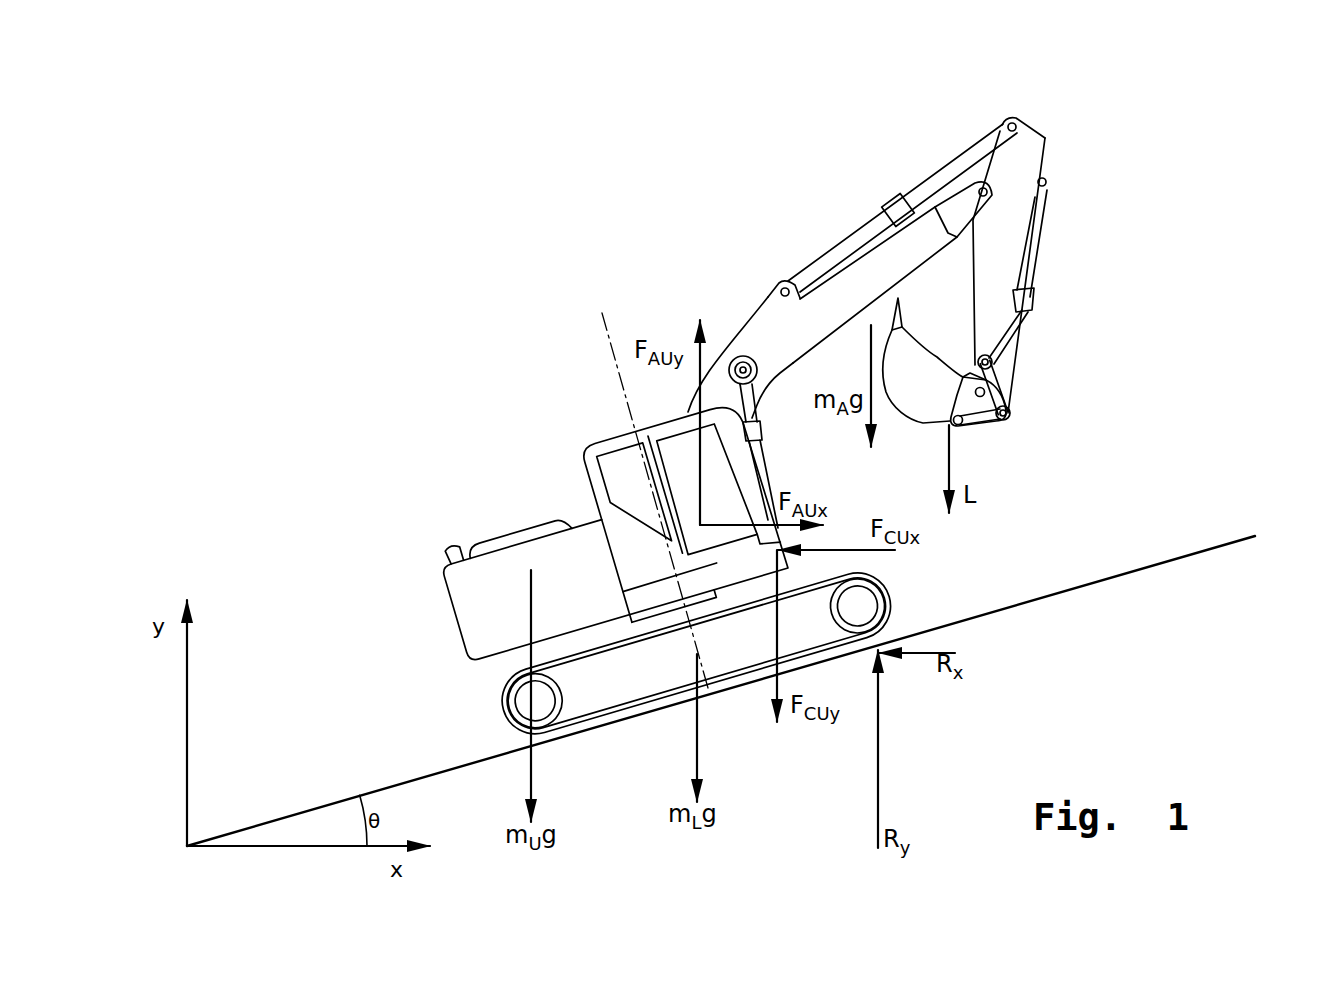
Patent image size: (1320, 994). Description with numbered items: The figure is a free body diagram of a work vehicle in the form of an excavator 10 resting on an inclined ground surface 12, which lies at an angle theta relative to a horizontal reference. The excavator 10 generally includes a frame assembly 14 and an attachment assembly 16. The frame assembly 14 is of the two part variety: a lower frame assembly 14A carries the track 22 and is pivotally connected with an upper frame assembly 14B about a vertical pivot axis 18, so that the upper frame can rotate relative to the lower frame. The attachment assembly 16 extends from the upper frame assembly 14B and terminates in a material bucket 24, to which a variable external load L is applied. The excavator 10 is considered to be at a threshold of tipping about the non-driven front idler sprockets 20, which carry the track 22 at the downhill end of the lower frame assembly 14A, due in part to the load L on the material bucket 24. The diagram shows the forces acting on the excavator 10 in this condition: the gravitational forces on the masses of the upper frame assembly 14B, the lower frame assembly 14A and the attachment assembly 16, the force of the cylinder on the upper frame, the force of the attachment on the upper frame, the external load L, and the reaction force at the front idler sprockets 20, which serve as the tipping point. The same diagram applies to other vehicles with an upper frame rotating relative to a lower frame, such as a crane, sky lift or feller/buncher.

The excavator 10 is at (676, 217).
The inclined ground surface 12 is at (1157, 567).
The frame assembly 14 is at (472, 699).
The lower frame assembly 14A is at (505, 722).
The upper frame assembly 14B is at (446, 597).
The attachment assembly 16 is at (1040, 125).
The vertical pivot axis 18 is at (607, 333).
The non-driven front idler sprockets 20 is at (873, 606).
The track 22 is at (897, 616).
The material bucket 24 is at (918, 352).